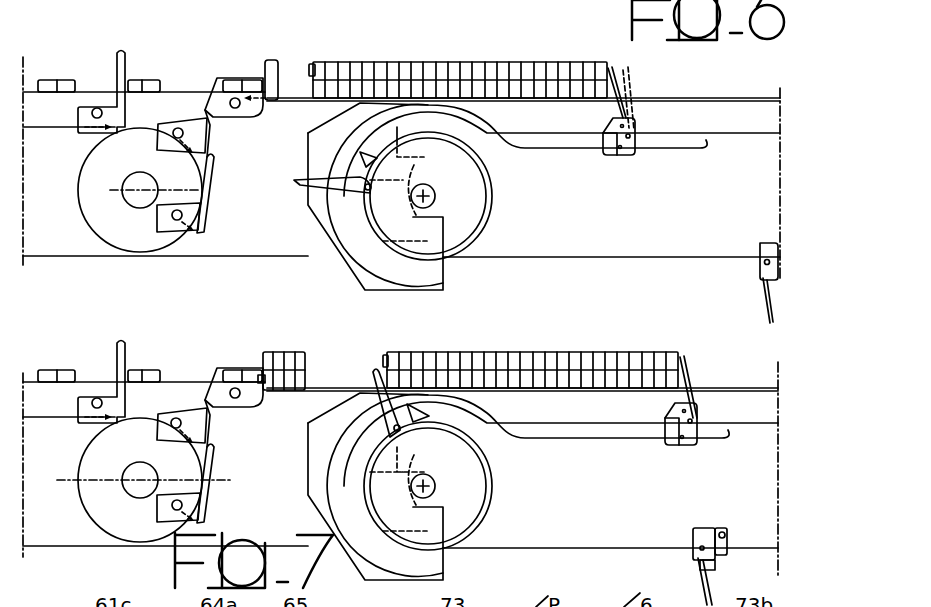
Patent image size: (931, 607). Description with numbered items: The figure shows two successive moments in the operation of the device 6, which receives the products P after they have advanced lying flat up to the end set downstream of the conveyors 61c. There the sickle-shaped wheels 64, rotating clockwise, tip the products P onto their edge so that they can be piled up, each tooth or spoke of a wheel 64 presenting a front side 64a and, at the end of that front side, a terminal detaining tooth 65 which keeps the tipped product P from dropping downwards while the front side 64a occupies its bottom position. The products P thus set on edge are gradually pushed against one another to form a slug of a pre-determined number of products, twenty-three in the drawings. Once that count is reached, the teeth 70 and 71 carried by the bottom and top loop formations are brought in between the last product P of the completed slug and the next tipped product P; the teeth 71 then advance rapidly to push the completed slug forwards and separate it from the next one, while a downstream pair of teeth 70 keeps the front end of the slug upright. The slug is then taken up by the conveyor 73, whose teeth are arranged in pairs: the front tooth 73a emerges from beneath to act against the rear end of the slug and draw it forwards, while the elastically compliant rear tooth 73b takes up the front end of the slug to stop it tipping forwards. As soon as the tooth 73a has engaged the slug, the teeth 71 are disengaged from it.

In FIG. 6, the device 6 is at (538, 52).
In FIG. 7, the device 6 is at (543, 432).
In FIG. 6, the end of conveyor 61c is at (98, 77).
In FIG. 7, the end of conveyor 61c is at (144, 414).
In FIG. 6, the wheel 64 is at (247, 127).
In FIG. 7, the wheel 64 is at (239, 445).
In FIG. 6, the front side 64a is at (225, 77).
In FIG. 7, the front side 64a is at (232, 354).
In FIG. 6, the terminal detaining tooth 65 is at (207, 120).
In FIG. 7, the terminal detaining tooth 65 is at (231, 424).
In FIG. 6, the tooth 70 is at (289, 100).
In FIG. 7, the tooth 70 is at (522, 372).
In FIG. 6, the tooth 71 is at (312, 67).
In FIG. 7, the tooth 71 is at (372, 346).
In FIG. 6, the conveyor 73 is at (577, 185).
In FIG. 7, the conveyor 73 is at (610, 509).
In FIG. 6, the front tooth 73a is at (293, 200).
In FIG. 7, the front tooth 73a is at (348, 431).
In FIG. 6, the rear tooth 73b is at (622, 61).
In FIG. 7, the rear tooth 73b is at (711, 480).
In FIG. 6, the product P is at (47, 78).
In FIG. 7, the product P is at (355, 336).